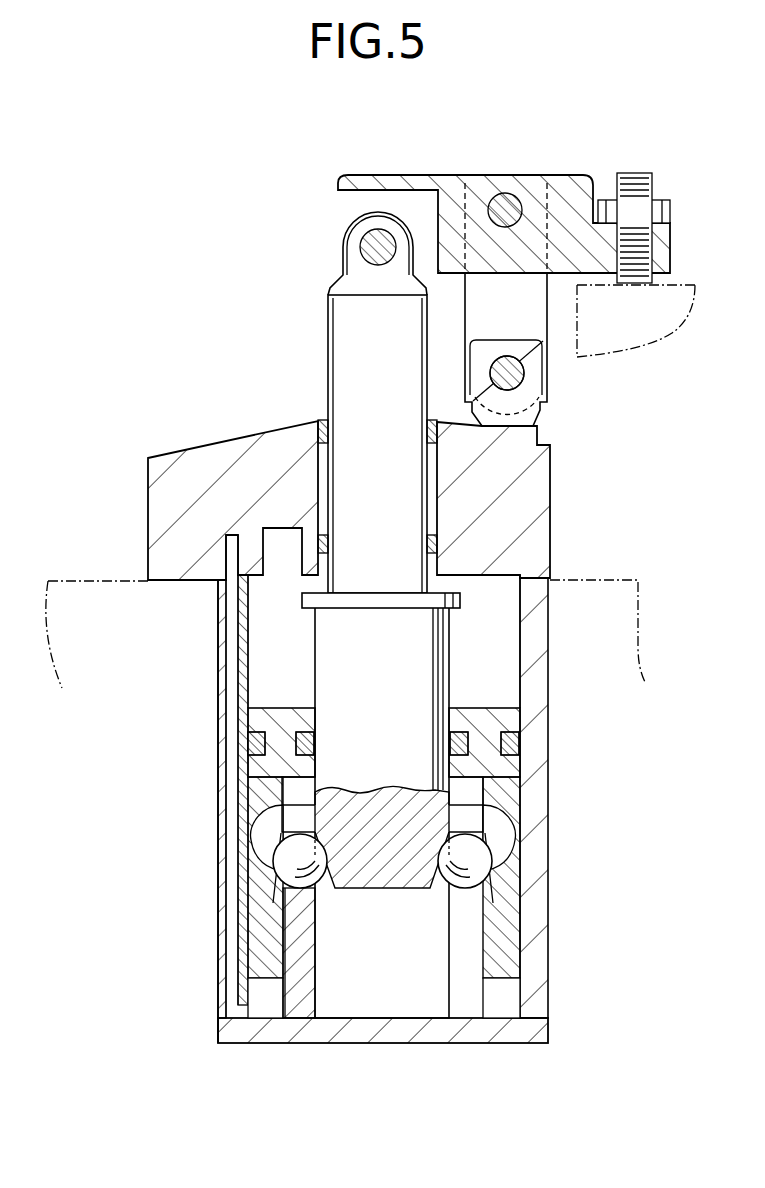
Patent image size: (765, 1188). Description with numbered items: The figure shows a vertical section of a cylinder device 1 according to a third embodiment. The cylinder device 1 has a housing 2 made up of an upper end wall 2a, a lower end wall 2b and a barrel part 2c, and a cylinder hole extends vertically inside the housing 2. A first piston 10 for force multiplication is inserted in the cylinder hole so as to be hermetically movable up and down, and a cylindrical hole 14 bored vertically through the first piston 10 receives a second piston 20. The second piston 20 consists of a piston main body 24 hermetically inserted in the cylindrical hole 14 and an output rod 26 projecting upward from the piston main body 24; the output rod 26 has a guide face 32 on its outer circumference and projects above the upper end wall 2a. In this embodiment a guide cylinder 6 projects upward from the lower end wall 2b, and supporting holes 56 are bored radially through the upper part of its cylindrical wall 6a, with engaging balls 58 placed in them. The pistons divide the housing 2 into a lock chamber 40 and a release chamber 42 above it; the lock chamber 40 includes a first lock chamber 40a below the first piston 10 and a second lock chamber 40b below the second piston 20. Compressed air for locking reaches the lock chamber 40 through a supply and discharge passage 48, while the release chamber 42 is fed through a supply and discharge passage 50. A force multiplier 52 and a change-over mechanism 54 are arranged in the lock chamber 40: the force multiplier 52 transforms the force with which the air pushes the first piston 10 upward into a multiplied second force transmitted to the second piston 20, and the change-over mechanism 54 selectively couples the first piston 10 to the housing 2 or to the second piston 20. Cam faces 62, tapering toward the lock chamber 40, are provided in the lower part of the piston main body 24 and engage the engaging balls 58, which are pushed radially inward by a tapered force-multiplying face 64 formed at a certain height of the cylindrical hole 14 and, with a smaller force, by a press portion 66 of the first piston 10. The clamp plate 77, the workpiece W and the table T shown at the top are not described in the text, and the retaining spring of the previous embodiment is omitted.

The cylinder device 1 is at (591, 480).
The housing 2 is at (380, 758).
The upper end wall 2a is at (258, 453).
The lower end wall 2b is at (413, 1046).
The barrel part 2c is at (545, 794).
The guide cylinder 6 is at (437, 935).
The cylindrical wall 6a is at (470, 1046).
The first piston 10 is at (532, 883).
The cylindrical hole 14 is at (312, 720).
The second piston 20 is at (460, 667).
The piston main body 24 is at (327, 647).
The output rod 26 is at (330, 343).
The guide face 32 is at (312, 770).
The lock chamber 40 is at (321, 1096).
The first lock chamber 40a is at (282, 1048).
The second lock chamber 40b is at (355, 1046).
The release chamber 42 is at (503, 622).
The supply and discharge passage 48 is at (228, 805).
The supply and discharge passage 50 is at (283, 540).
The force multiplier 52 is at (510, 906).
The change-over mechanism 54 is at (540, 832).
The supporting holes 56 is at (445, 825).
The engaging balls 58 is at (328, 890).
The cam face 62 is at (335, 872).
The force-multiplying face 64 is at (293, 905).
The press portion 66 is at (263, 862).
The clamp plate 77 is at (458, 180).
The workpiece W is at (638, 351).
The table T is at (592, 580).